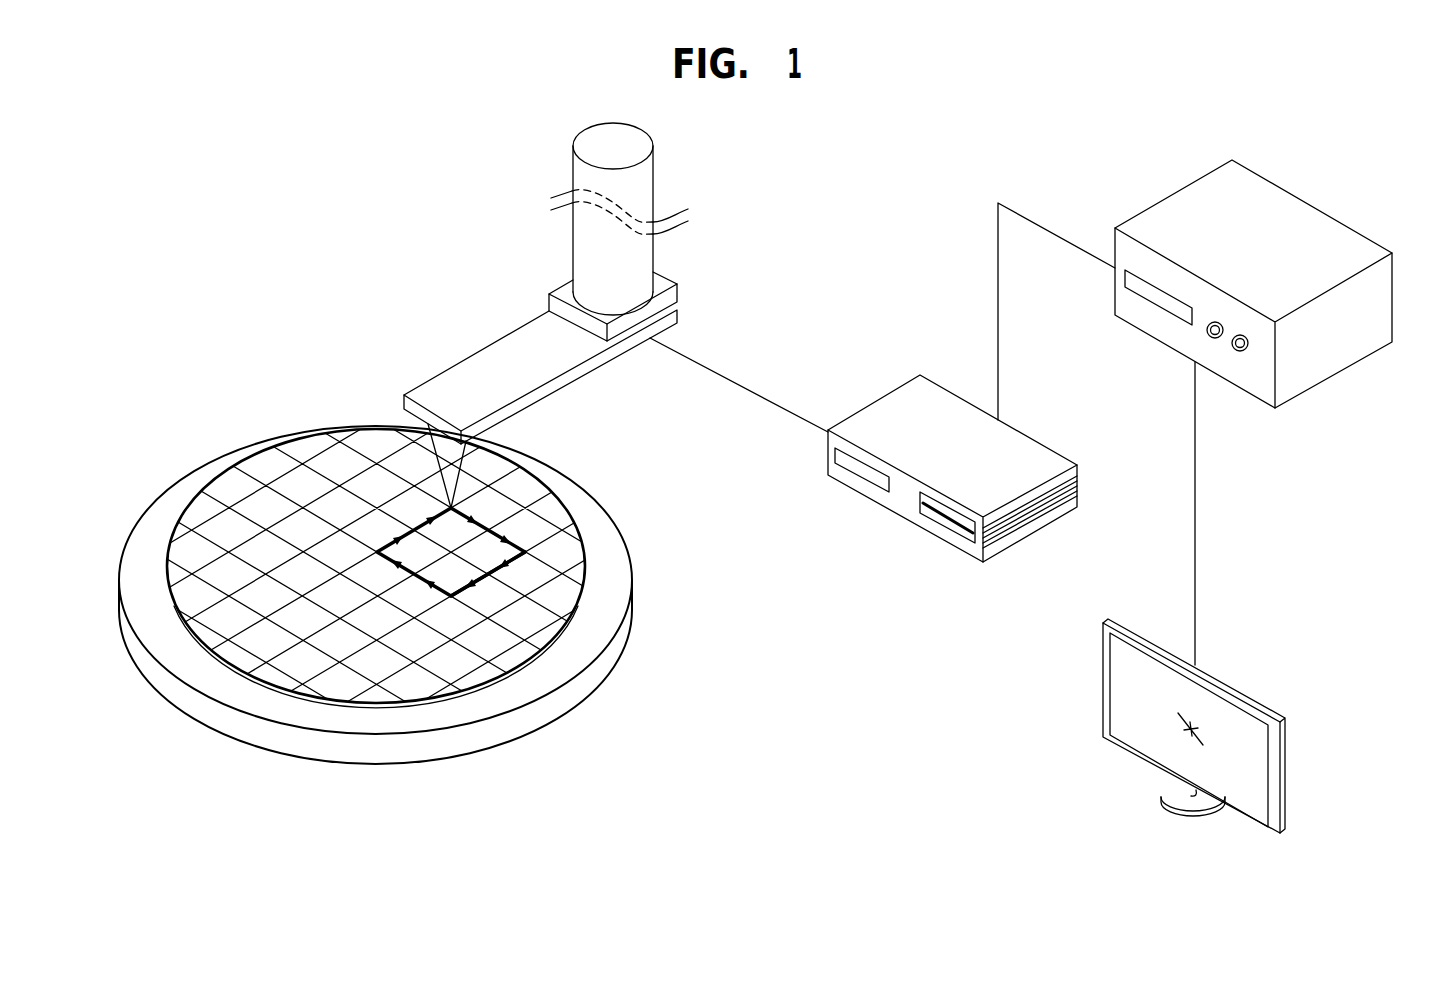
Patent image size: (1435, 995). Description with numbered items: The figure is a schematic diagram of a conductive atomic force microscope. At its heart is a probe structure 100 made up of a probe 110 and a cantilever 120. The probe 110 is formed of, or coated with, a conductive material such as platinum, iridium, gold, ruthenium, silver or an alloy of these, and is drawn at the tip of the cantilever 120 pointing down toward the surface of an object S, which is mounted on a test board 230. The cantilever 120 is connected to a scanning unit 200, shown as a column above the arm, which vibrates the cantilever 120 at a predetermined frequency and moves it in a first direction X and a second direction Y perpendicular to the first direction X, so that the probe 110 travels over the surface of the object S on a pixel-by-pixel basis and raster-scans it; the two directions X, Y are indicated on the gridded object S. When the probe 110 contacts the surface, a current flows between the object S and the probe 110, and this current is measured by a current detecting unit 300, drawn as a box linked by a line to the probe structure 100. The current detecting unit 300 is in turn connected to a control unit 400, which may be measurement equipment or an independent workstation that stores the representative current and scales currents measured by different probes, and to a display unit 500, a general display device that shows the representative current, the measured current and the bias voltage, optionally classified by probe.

The probe structure 100 is at (378, 323).
The probe 110 is at (445, 463).
The cantilever 120 is at (440, 390).
The scanning unit 200 is at (650, 133).
The test board 230 is at (633, 584).
The object S is at (556, 494).
The first direction X is at (503, 539).
The second direction Y is at (512, 564).
The current detecting unit 300 is at (1033, 438).
The control unit 400 is at (1342, 222).
The display unit 500 is at (1247, 697).